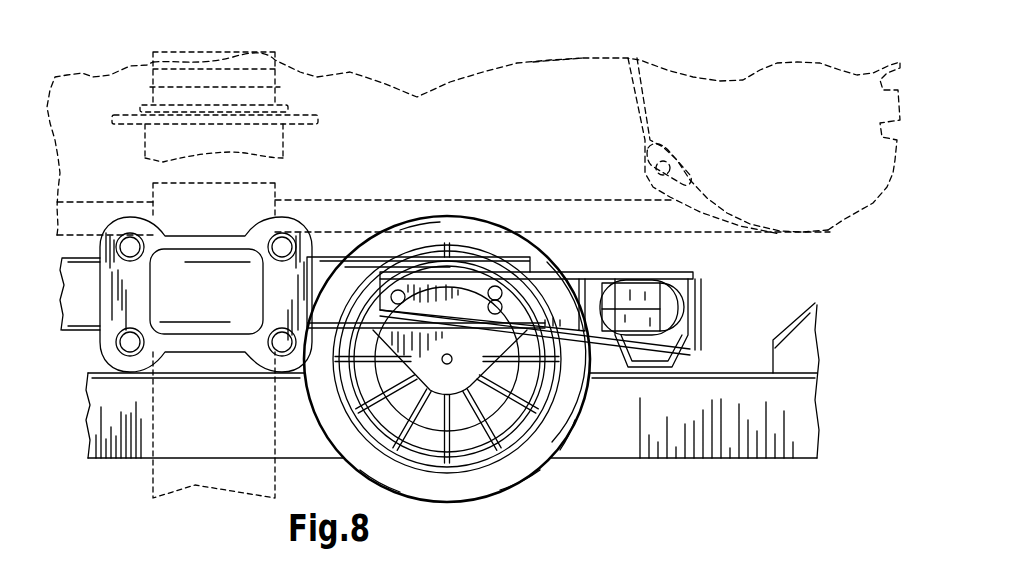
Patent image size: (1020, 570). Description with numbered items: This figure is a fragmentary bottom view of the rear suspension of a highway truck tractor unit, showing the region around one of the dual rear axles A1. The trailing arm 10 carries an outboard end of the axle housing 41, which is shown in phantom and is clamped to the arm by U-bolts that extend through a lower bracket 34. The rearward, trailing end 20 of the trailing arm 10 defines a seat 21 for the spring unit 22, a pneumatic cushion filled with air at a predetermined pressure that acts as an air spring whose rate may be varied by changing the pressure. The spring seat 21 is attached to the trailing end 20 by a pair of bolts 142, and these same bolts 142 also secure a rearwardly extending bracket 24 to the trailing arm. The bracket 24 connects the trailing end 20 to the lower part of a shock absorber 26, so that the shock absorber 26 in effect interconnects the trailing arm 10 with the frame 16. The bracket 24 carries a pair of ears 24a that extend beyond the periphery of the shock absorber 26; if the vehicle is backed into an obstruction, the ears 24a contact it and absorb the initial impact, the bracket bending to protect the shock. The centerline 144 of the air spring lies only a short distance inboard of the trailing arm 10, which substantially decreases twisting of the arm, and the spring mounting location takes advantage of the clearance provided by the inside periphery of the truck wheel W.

The trailing arm 10 is at (57, 337).
The frame 16 is at (634, 422).
The trailing end 20 is at (330, 272).
The seat 21 is at (493, 354).
The spring unit 22 is at (503, 493).
The bracket 24 is at (548, 270).
The ears 24a is at (693, 273).
The shock absorber 26 is at (690, 295).
The lower bracket 34 is at (123, 233).
The axle housing 41 is at (265, 195).
The bolts 142 is at (392, 296).
The centerline 144 is at (442, 362).
The rear axle A1 is at (256, 40).
The truck wheel W is at (830, 229).